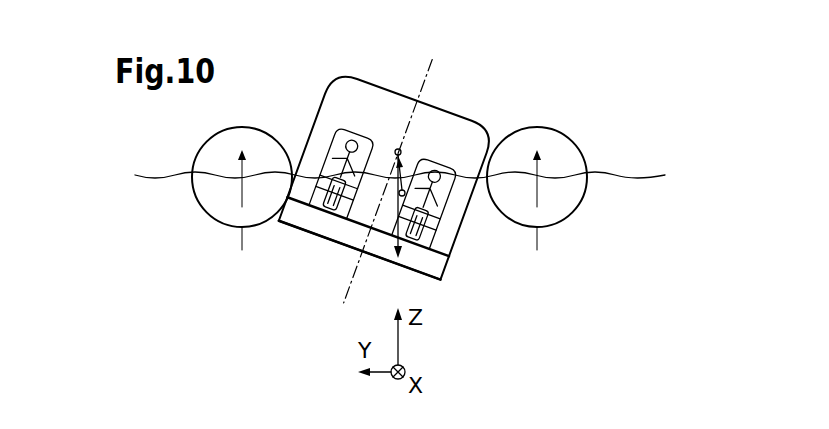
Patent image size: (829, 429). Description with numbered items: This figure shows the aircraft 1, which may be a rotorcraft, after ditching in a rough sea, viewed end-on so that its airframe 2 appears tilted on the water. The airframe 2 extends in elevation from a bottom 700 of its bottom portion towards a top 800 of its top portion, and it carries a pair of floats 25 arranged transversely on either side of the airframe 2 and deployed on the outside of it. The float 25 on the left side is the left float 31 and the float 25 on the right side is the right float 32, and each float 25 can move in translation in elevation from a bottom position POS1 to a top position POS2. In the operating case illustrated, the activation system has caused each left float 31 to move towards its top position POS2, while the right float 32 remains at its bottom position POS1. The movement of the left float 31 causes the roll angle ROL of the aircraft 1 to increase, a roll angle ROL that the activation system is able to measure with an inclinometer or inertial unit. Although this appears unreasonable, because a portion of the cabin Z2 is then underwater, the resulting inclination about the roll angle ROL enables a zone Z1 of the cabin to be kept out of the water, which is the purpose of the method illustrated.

The aircraft 1 is at (501, 72).
The airframe 2 is at (322, 108).
The float 25 is at (386, 193).
The left float 31 is at (629, 193).
The right float 32 is at (147, 192).
The bottom position POS1 is at (242, 250).
The top position POS2 is at (537, 250).
The bottom 700 is at (364, 238).
The top 800 is at (398, 94).
The zone of the cabin Z1 is at (342, 173).
The portion of the cabin Z2 is at (425, 203).
The roll angle ROL is at (388, 181).